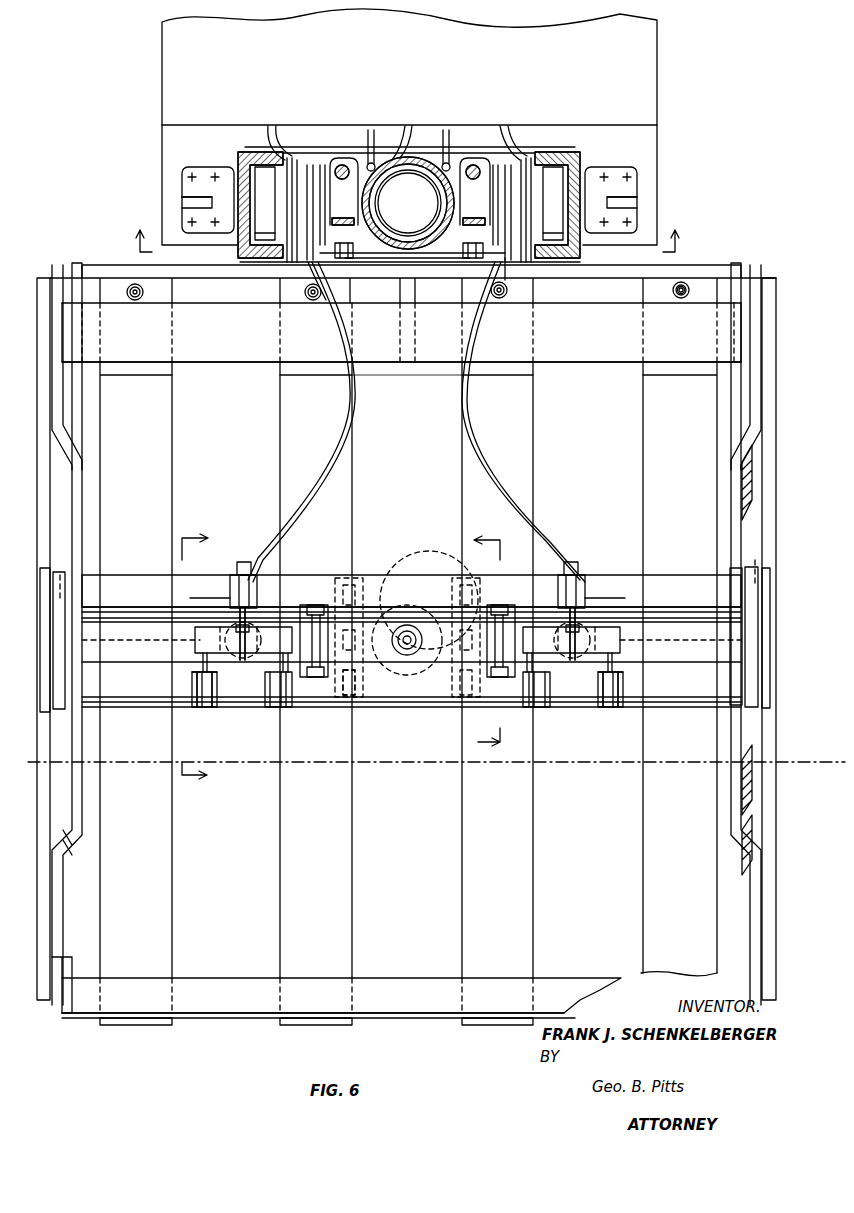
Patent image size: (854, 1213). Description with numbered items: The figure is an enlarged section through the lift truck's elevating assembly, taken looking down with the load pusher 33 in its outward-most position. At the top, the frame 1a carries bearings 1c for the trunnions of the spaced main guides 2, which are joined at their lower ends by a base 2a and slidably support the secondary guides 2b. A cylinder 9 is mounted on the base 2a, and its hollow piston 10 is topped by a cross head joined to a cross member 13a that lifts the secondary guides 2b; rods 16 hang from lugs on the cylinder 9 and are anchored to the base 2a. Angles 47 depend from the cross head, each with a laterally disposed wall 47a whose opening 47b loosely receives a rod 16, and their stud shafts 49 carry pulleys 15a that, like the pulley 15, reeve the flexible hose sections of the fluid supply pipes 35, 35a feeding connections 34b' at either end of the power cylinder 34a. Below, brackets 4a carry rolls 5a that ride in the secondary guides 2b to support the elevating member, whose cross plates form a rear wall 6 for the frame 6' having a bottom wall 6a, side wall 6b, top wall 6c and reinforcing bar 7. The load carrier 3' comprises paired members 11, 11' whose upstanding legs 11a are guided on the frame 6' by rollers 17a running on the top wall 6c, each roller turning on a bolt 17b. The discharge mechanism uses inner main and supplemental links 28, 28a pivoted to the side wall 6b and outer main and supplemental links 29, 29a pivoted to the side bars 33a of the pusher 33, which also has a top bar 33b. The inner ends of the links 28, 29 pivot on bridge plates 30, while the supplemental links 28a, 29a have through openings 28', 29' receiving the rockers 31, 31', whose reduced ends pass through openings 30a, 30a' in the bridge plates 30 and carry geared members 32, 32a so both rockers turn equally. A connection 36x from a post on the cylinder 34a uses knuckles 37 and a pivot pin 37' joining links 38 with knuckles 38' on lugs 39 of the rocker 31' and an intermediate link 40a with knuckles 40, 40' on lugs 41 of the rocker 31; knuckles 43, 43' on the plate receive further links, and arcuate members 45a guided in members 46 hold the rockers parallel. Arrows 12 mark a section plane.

The frame 1a is at (180, 192).
The bearings 1c is at (186, 170).
The main guides 2 is at (262, 155).
The base 2a is at (455, 160).
The secondary guides 2b is at (252, 262).
The load carrier 3' is at (407, 637).
The brackets 4a is at (528, 303).
The rolls 5a is at (290, 262).
The rear wall 6 is at (411, 259).
The frame 6' is at (401, 332).
The bottom wall 6a is at (484, 638).
The side wall 6b is at (77, 263).
The top wall 6c is at (598, 370).
The bar 7 is at (409, 228).
The cylinder 9 is at (394, 258).
The piston 10 is at (22, 772).
The carrier member 11 is at (368, 670).
The carrier member 11' is at (445, 670).
The upstanding leg 11a is at (145, 380).
The section line 12 is at (195, 656).
The cross member 13a is at (456, 262).
The pulley 15 is at (504, 272).
The pulleys 15a is at (302, 318).
The rods 16 is at (338, 165).
The roller 17a is at (133, 301).
The bolt 17b is at (678, 300).
The inner main links 28 is at (423, 639).
The through opening 28' is at (435, 564).
The inner supplemental links 28a is at (84, 470).
The outer main links 29 is at (68, 932).
The through opening 29' is at (446, 696).
The outer supplemental links 29a is at (95, 893).
The bridge plates 30 is at (196, 630).
The opening 30a is at (433, 616).
The opening 30a' is at (401, 688).
The rocker 31 is at (411, 576).
The rocker 31' is at (411, 721).
The member 32 is at (55, 562).
The member 32a is at (765, 664).
The load pusher 33 is at (389, 982).
The side bars 33a is at (80, 995).
The top bar 33b is at (204, 1012).
The cylinder 34a is at (407, 660).
The connections 34b' is at (425, 608).
The fluid supply pipe 35 is at (338, 468).
The fluid supply pipe 35a is at (472, 462).
The connection 36x is at (222, 638).
The knuckles 37 is at (430, 664).
The pivot pin 37' is at (414, 608).
The links 38 is at (407, 705).
The knuckles 38' is at (400, 711).
The lugs 39 is at (214, 708).
The knuckle 40 is at (407, 659).
The knuckle 40' is at (406, 599).
The intermediate link 40a is at (238, 610).
The lugs 41 is at (255, 574).
The knuckle 43 is at (342, 622).
The knuckle 43' is at (451, 635).
The arcuate members 45a is at (350, 700).
The members 46 is at (508, 606).
The angles 47 is at (461, 245).
The laterally disposed walls 47a is at (378, 202).
The opening 47b is at (369, 160).
The stud shafts 49 is at (478, 212).